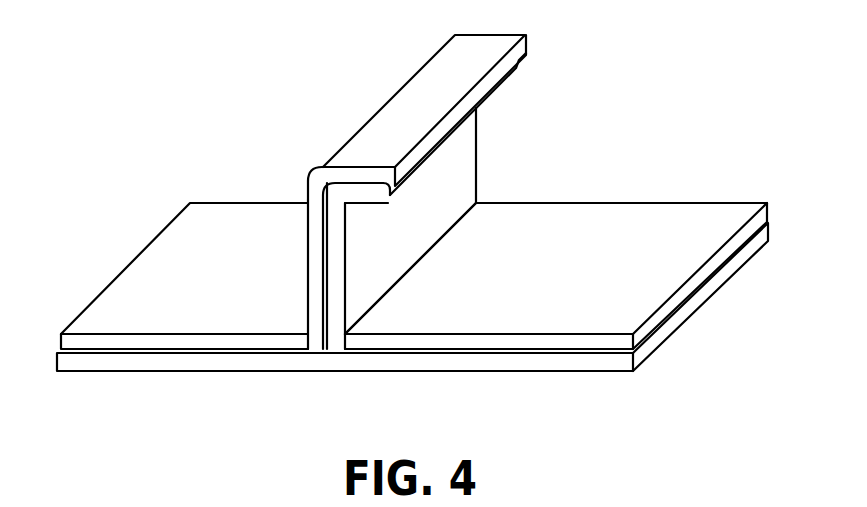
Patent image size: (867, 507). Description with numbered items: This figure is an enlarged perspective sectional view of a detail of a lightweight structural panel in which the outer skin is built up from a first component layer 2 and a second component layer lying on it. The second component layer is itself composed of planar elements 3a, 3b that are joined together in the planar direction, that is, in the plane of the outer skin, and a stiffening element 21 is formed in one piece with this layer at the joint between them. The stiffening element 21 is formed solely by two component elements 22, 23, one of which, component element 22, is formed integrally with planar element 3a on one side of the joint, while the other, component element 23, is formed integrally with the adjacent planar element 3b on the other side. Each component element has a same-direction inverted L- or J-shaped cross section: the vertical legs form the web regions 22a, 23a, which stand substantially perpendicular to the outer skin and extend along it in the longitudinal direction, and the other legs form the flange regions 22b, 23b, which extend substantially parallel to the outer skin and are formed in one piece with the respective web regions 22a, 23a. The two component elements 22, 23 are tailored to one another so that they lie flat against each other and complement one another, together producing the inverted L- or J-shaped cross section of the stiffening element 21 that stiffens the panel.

The first component layer 2 is at (548, 363).
The planar element 3a is at (720, 218).
The planar element 3b is at (247, 210).
The stiffening element 21 is at (592, 32).
The component element 22 is at (457, 162).
The web region 22a is at (463, 198).
The flange region 22b is at (363, 196).
The component element 23 is at (302, 237).
The web region 23a is at (313, 275).
The flange region 23b is at (395, 124).